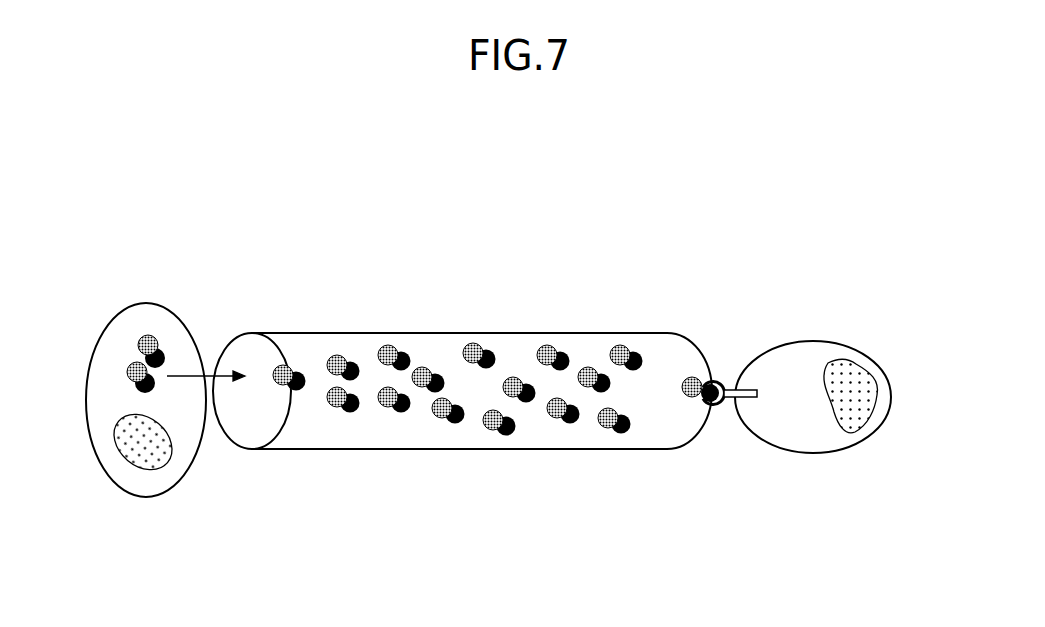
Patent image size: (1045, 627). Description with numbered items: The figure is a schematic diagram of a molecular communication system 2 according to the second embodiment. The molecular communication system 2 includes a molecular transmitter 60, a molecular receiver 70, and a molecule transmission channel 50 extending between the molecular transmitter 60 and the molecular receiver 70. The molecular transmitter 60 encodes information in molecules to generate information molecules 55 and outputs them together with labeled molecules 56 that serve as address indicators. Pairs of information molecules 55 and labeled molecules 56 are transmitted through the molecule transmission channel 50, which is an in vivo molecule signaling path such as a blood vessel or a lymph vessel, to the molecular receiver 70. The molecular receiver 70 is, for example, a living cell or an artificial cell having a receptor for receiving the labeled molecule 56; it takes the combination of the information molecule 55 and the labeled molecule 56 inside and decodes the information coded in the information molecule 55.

The molecular communication system 2 is at (742, 215).
The molecule transmission channel 50 is at (397, 333).
The information molecule 55 is at (617, 345).
The labeled molecule 56 is at (521, 404).
The molecular transmitter 60 is at (146, 303).
The molecular receiver 70 is at (773, 347).